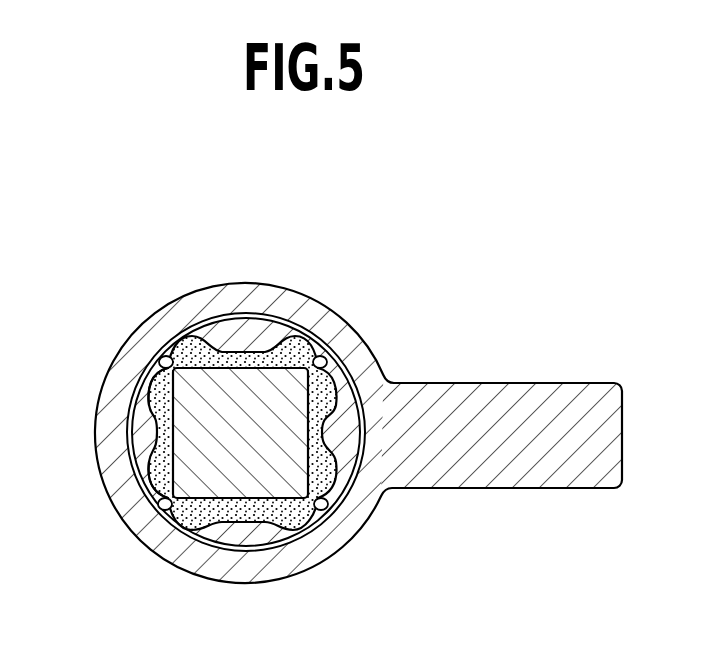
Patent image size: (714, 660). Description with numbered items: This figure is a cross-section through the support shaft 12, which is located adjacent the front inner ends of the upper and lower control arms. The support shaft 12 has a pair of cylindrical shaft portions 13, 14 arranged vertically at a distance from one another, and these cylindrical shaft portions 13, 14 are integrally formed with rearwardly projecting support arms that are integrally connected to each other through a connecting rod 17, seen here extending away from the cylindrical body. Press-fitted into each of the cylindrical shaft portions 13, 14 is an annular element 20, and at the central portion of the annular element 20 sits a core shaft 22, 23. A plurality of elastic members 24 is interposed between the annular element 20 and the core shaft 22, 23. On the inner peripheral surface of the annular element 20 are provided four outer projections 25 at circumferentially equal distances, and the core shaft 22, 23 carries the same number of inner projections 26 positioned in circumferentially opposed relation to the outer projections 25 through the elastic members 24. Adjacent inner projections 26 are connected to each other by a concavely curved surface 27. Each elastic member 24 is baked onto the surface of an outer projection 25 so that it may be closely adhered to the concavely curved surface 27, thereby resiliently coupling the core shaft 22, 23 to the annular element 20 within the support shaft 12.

The support shaft 12 is at (366, 337).
The cylindrical shaft portion 13 is at (239, 407).
The cylindrical shaft portion 14 is at (205, 302).
The connecting rod 17 is at (506, 400).
The annular element 20 is at (262, 328).
The core shaft 22 is at (240, 433).
The core shaft 23 is at (280, 457).
The elastic member 24 is at (313, 438).
The outer projection 25 is at (163, 413).
The inner projection 26 is at (160, 360).
The concavely curved surface 27 is at (150, 455).